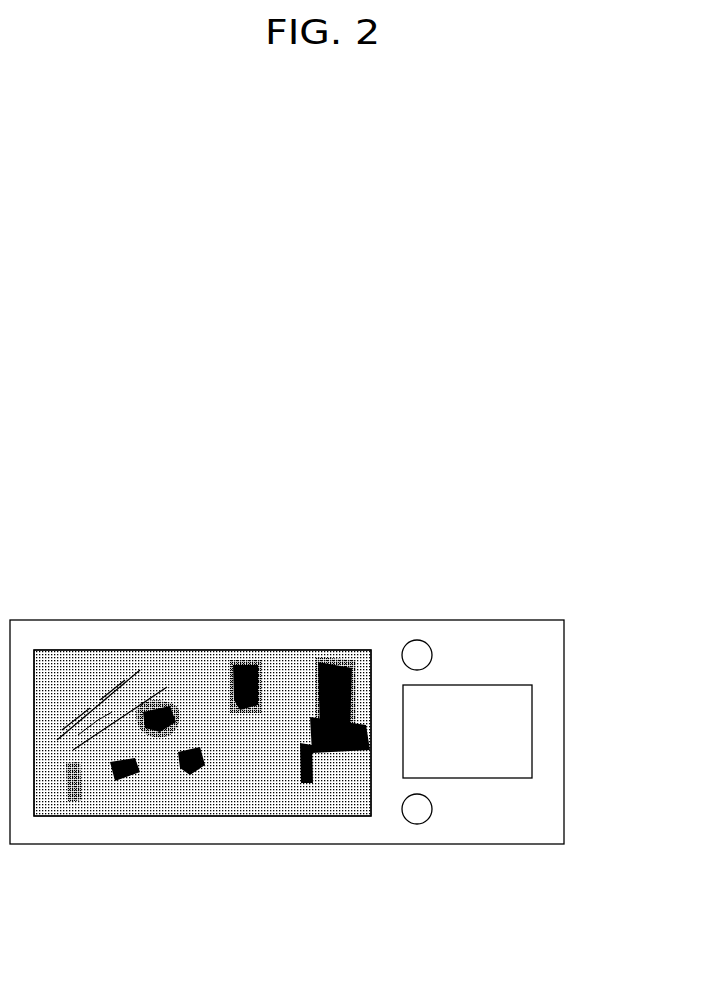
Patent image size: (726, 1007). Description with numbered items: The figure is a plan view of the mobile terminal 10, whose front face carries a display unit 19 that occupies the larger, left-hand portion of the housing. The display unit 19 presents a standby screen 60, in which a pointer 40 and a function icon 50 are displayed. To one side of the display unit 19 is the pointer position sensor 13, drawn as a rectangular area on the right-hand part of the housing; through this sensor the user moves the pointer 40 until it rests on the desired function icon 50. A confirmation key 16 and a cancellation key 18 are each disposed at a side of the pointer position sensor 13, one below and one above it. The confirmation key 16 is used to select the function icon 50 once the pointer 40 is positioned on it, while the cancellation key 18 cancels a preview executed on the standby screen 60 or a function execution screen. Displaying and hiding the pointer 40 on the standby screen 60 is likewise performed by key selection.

The mobile terminal 10 is at (552, 535).
The pointer position sensor 13 is at (533, 730).
The confirmation key 16 is at (418, 824).
The cancellation key 18 is at (417, 640).
The display unit 19 is at (95, 650).
The pointer 40 is at (198, 755).
The function icon 50 is at (302, 760).
The standby screen 60 is at (160, 800).